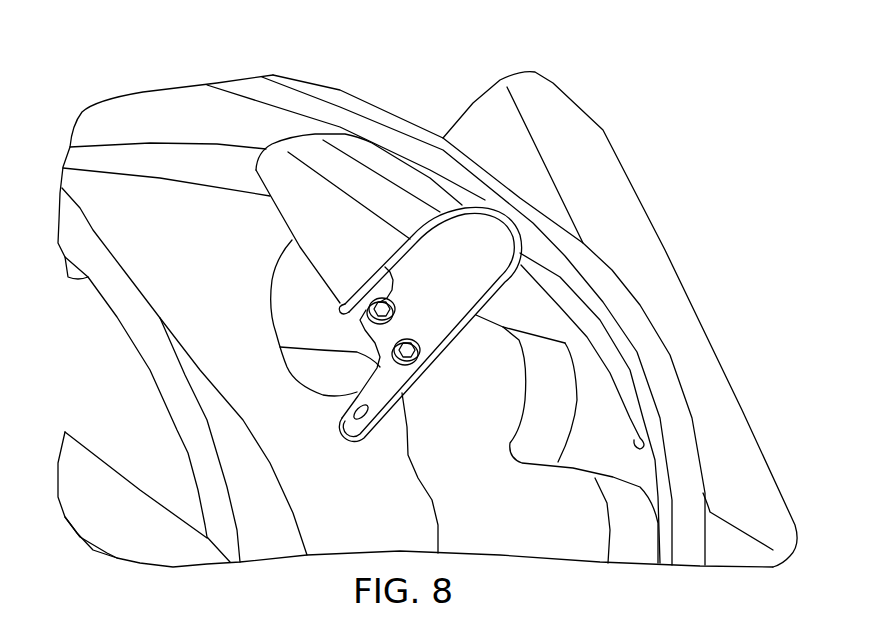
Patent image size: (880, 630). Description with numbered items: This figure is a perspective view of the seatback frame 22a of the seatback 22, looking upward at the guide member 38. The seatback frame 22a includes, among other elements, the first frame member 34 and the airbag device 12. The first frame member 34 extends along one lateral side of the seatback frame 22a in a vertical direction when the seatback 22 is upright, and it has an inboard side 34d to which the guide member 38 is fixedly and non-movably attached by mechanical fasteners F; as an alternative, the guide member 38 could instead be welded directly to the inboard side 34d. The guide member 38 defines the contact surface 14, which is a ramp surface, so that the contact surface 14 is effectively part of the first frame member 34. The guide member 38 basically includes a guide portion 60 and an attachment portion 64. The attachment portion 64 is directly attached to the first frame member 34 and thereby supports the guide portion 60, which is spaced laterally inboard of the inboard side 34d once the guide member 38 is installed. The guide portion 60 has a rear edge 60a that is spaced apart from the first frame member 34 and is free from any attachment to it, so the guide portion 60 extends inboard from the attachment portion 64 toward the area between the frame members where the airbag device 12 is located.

The airbag device 12 is at (567, 123).
The contact surface 14 is at (347, 168).
The seatback 22 is at (290, 52).
The seatback frame 22a is at (413, 117).
The first frame member 34 is at (464, 416).
The inboard side 34d is at (430, 450).
The guide member 38 is at (330, 186).
The guide portion 60 is at (272, 173).
The rear edge 60a is at (284, 221).
The attachment portion 64 is at (435, 313).
The mechanical fasteners F is at (393, 343).